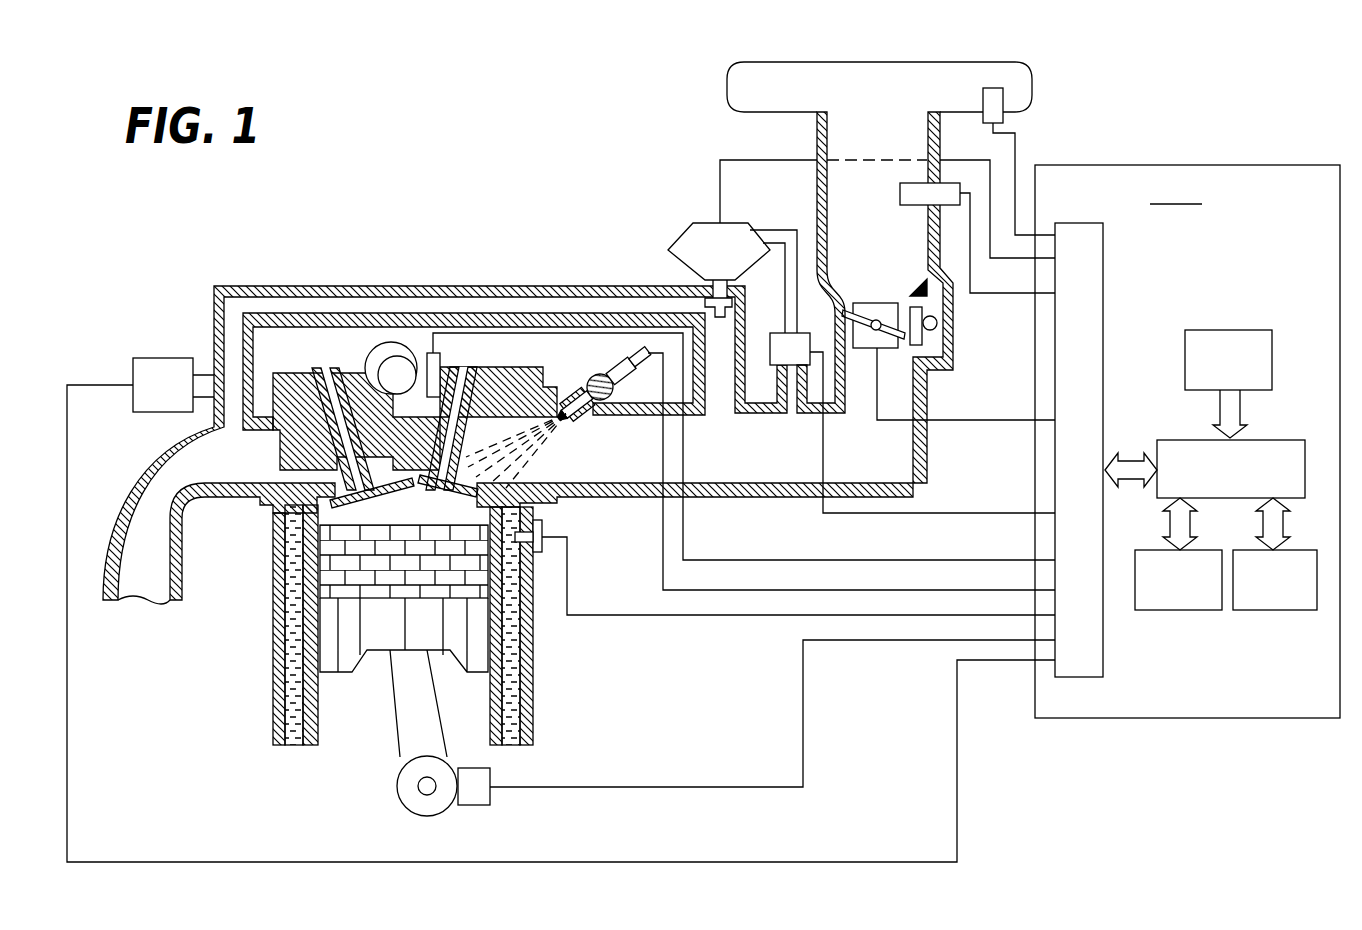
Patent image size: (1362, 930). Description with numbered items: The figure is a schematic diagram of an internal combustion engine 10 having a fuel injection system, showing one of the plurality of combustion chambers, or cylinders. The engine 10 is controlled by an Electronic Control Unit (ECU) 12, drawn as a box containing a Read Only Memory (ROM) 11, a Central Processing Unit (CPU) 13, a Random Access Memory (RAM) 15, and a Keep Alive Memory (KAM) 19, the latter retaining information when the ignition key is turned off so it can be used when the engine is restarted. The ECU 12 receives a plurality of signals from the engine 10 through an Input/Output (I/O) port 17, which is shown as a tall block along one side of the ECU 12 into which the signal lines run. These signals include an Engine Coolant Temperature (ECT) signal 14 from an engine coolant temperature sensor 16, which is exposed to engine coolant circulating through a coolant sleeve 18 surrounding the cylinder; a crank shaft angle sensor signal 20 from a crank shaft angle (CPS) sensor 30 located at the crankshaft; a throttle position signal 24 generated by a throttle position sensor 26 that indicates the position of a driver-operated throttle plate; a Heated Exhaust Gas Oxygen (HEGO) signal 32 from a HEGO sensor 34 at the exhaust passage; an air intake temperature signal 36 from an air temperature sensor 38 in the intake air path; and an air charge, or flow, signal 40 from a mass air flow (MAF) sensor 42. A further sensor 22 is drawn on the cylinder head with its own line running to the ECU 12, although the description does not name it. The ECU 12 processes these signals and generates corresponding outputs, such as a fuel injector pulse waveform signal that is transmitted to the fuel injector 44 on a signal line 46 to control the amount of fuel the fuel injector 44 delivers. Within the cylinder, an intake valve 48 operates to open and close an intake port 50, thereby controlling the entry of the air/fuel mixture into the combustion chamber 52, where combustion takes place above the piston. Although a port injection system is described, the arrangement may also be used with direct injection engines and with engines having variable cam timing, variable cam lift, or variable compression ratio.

The internal combustion engine 10 is at (559, 542).
The Read Only Memory (ROM) 11 is at (1228, 330).
The Electronic Control Unit (ECU) 12 is at (1284, 224).
The Central Processing Unit (CPU) 13 is at (1183, 440).
The Engine Coolant Temperature (ECT) signal 14 is at (590, 617).
The Random Access Memory (RAM) 15 is at (1172, 610).
The engine coolant temperature sensor 16 is at (545, 523).
The Input/Output (I/O) port 17 is at (1103, 283).
The coolant sleeve 18 is at (533, 718).
The Keep Alive Memory (KAM) 19 is at (1265, 610).
The crank shaft angle sensor signal 20 is at (773, 560).
The camshaft position sensor 22 is at (448, 360).
The throttle position signal 24 is at (993, 421).
The throttle position sensor 26 is at (880, 348).
The crank shaft angle (CPS) sensor 30 is at (477, 805).
The Heated Exhaust Gas Oxygen (HEGO) signal 32 is at (903, 862).
The HEGO sensor 34 is at (178, 402).
The air intake temperature signal 36 is at (1030, 150).
The air temperature sensor 38 is at (982, 97).
The air charge signal 40 is at (940, 247).
The mass air flow (MAF) sensor 42 is at (900, 190).
The fuel injector 44 is at (600, 373).
The signal line 46 is at (750, 590).
The intake valve 48 is at (465, 497).
The intake port 50 is at (364, 368).
The combustion chamber 52 is at (420, 521).